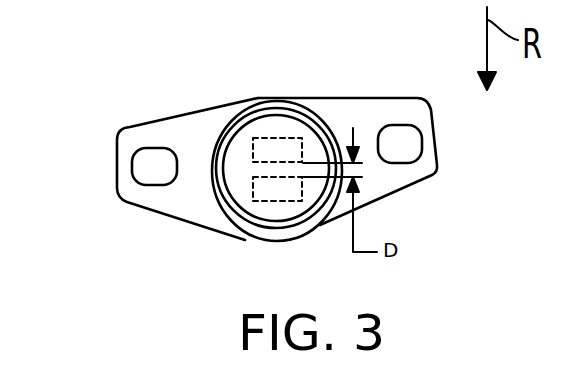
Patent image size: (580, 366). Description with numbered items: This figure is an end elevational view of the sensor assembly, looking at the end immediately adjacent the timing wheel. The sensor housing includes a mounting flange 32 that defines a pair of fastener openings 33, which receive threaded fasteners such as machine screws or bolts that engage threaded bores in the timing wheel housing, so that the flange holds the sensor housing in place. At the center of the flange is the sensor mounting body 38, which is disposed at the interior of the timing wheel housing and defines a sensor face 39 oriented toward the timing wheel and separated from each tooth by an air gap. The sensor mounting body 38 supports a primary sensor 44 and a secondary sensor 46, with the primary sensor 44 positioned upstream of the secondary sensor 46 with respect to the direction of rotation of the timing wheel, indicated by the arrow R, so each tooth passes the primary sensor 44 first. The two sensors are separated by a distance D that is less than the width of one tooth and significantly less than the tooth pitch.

The mounting flange 32 is at (343, 110).
The fastener openings 33 is at (146, 183).
The sensor mounting body 38 is at (258, 98).
The sensor face 39 is at (276, 123).
The primary sensor 44 is at (257, 146).
The secondary sensor 46 is at (257, 185).